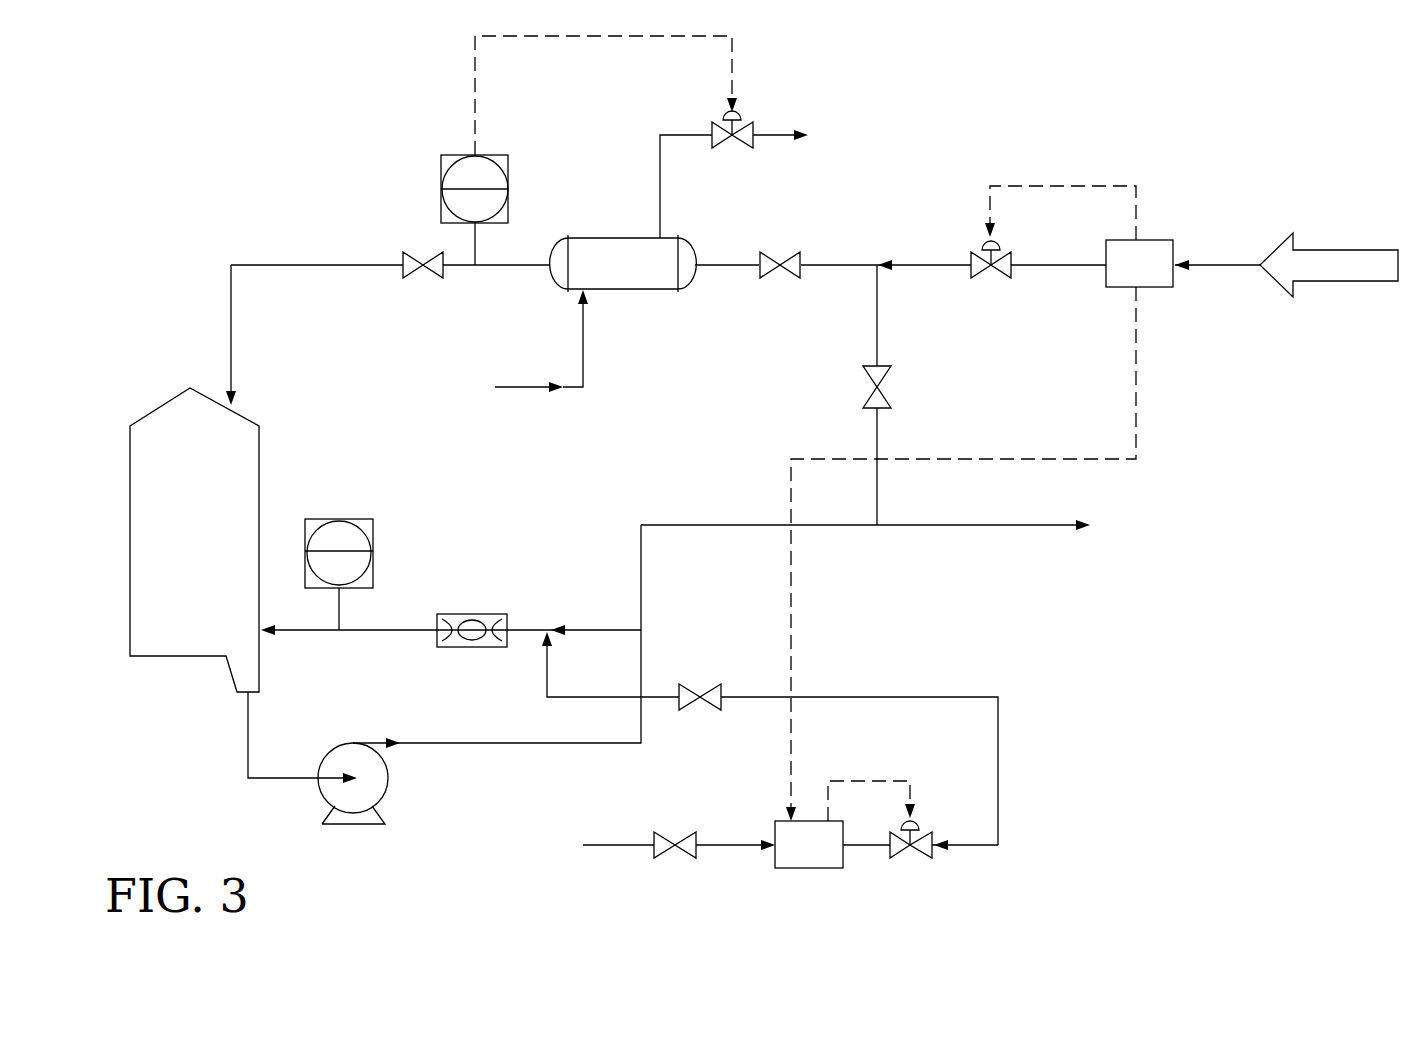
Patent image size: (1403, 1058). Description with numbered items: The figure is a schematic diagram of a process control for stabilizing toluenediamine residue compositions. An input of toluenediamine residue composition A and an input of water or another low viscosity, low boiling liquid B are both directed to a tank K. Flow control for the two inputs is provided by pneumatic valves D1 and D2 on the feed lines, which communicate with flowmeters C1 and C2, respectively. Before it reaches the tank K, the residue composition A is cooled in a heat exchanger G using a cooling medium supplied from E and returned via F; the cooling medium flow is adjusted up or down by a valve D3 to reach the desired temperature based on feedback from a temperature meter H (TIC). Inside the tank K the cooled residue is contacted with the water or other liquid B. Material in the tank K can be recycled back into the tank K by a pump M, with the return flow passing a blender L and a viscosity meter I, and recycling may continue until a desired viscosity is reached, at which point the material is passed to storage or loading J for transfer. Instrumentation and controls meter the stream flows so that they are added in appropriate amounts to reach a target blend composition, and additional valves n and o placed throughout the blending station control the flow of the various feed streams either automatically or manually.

The toluenediamine residue composition input A is at (1286, 256).
The water or other low viscosity, low boiling liquid input B is at (532, 845).
The flowmeter C1 is at (1168, 280).
The flowmeter C2 is at (811, 860).
The pneumatic valve D1 is at (991, 274).
The pneumatic valve D2 is at (911, 854).
The valve D3 is at (732, 144).
The cooling medium supply E is at (443, 383).
The cooling medium return F is at (861, 138).
The heat exchanger G is at (623, 263).
The temperature meter H is at (459, 189).
The viscosity meter I is at (339, 559).
The storage or loading J is at (1144, 512).
The tank K is at (194, 540).
The blender L is at (472, 615).
The pump M is at (368, 783).
The additional valves n is at (647, 330).
The additional valves o is at (687, 780).